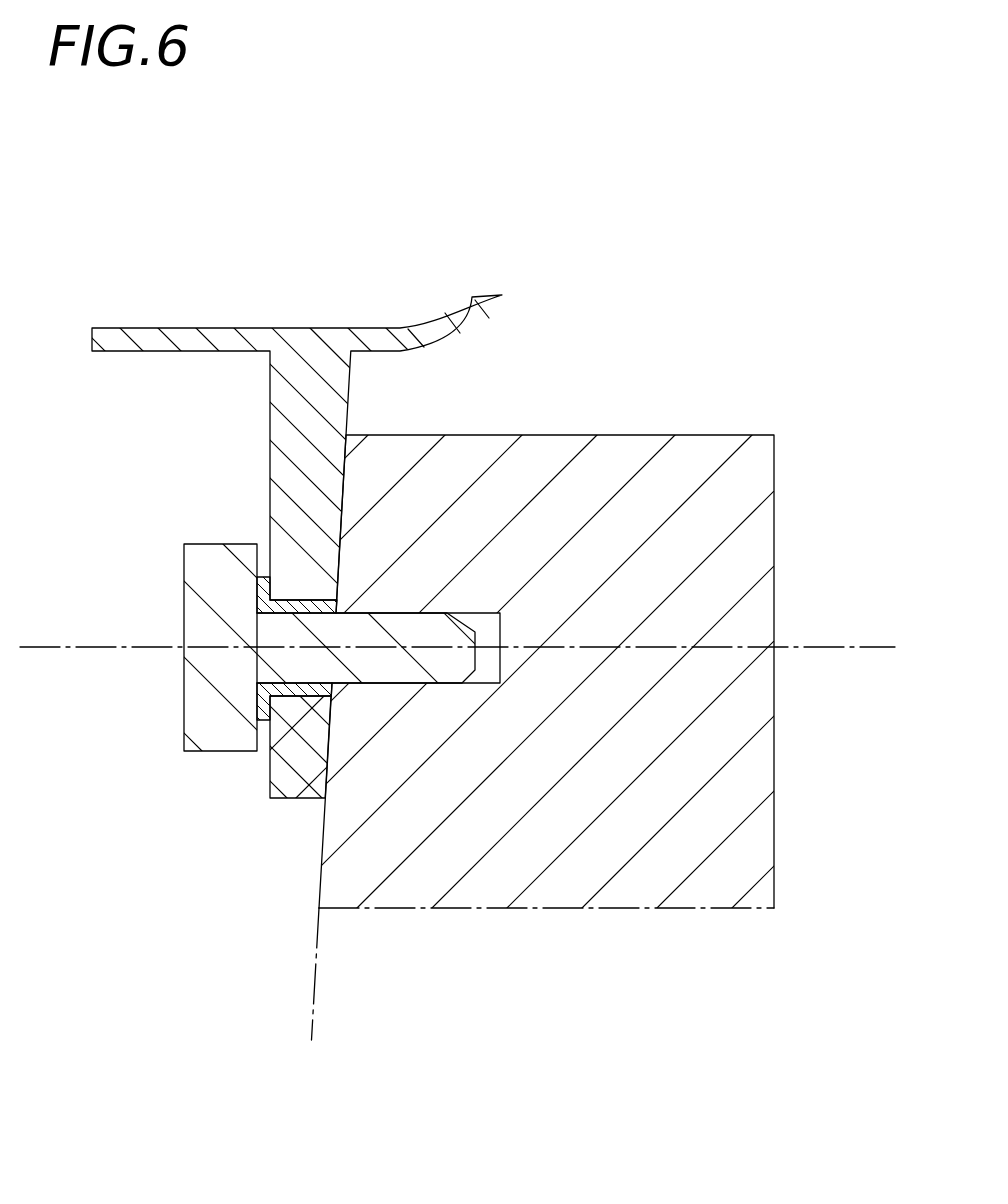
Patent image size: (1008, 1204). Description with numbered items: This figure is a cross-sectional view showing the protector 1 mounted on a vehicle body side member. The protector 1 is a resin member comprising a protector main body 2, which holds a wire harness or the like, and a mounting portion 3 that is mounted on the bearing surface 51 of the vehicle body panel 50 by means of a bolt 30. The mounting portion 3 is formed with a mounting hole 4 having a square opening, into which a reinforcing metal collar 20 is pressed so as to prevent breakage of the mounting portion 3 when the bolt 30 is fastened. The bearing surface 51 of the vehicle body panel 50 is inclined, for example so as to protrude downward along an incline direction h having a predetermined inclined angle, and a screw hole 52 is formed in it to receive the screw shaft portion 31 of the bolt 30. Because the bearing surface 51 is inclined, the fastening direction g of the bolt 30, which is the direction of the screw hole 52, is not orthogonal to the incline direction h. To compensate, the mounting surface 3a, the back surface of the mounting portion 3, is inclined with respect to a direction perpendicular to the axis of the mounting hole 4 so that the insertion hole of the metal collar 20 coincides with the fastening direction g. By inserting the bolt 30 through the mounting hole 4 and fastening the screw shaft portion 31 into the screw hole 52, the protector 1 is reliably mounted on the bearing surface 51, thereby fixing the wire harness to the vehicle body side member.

The protector 1 is at (290, 300).
The protector main body 2 is at (459, 307).
The mounting portion 3 is at (283, 430).
The mounting surface 3a is at (346, 478).
The mounting hole 4 is at (296, 693).
The metal collar 20 is at (302, 597).
The bolt 30 is at (200, 708).
The screw shaft portion 31 is at (395, 625).
The vehicle body panel 50 is at (728, 436).
The bearing surface 51 is at (322, 855).
The screw hole 52 is at (483, 617).
The fastening direction g is at (837, 647).
The incline direction h is at (315, 1029).